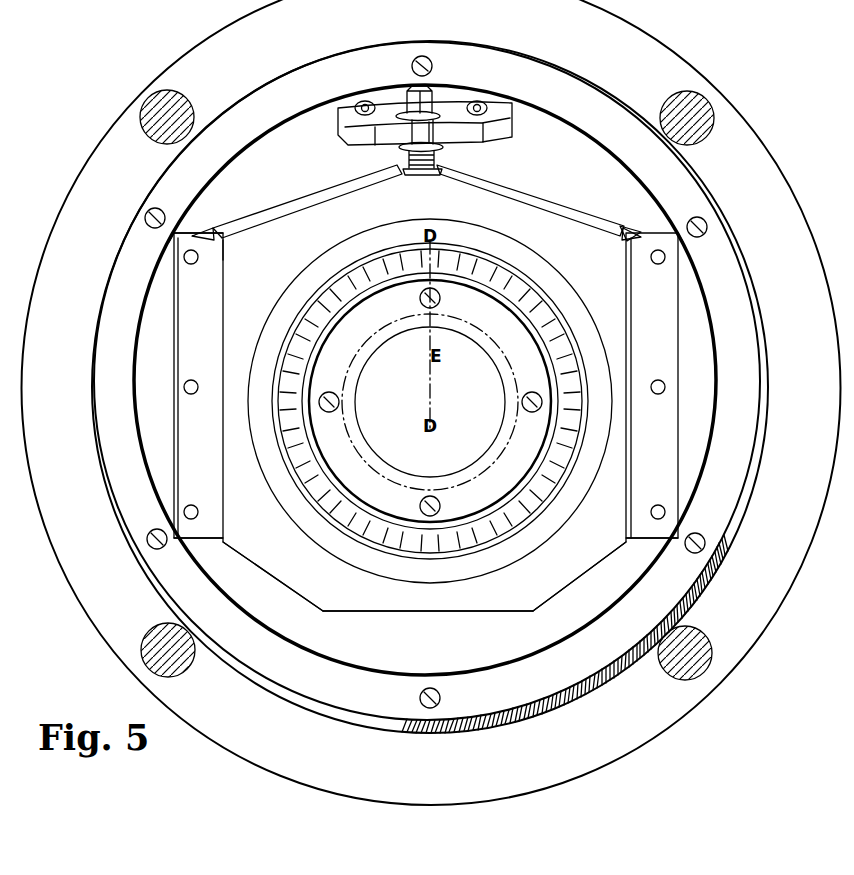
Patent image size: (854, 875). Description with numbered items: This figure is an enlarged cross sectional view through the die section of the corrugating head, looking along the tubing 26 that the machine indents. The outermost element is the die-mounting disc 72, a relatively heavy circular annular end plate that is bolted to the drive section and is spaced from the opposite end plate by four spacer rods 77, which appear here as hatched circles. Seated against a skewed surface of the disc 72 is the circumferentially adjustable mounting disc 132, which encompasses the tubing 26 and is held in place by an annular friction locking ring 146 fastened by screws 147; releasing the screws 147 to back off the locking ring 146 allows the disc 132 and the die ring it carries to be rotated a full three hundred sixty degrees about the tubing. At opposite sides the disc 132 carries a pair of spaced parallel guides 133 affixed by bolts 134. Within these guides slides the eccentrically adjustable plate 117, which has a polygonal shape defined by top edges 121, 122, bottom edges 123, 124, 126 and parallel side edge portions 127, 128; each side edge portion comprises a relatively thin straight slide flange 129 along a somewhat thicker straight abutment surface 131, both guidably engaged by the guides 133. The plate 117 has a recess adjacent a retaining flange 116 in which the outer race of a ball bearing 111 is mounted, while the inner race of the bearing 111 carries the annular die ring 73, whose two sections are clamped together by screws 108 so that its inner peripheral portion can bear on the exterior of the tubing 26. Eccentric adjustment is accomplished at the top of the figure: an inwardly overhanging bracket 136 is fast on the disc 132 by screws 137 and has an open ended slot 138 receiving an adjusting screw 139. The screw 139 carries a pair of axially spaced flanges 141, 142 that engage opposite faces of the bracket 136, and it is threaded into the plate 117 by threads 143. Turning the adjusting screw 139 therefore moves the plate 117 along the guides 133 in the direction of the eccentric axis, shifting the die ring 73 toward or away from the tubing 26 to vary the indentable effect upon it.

The die-mounting disc 72 is at (660, 57).
The spacer rods 77 is at (153, 140).
The screws 147 is at (698, 237).
The annular friction locking ring 146 is at (586, 106).
The circumferentially adjustable mounting disc 132 is at (266, 140).
The retaining flange 116 is at (298, 488).
The ball bearing 111 is at (546, 322).
The tubing 26 is at (484, 456).
The screws 108 is at (441, 301).
The annular die ring 73 is at (512, 367).
The guides 133 is at (426, 385).
The bolts 134 is at (194, 264).
The eccentrically adjustable plate 117 is at (426, 399).
The bottom edge 123 is at (259, 568).
The bottom edge 124 is at (465, 611).
The bottom edge 126 is at (583, 569).
The top edge 121 is at (313, 188).
The top edge 122 is at (537, 200).
The slide flange 129 is at (200, 230).
The abutment surface 131 is at (213, 230).
The side edge portion 127 is at (228, 245).
The side edge portion 128 is at (638, 229).
The bracket 136 is at (504, 130).
The screws 137 is at (360, 103).
The flange 142 is at (408, 110).
The flange 141 is at (402, 150).
The open ended slot 138 is at (439, 134).
The adjusting screw 139 is at (413, 92).
The threads 143 is at (430, 172).